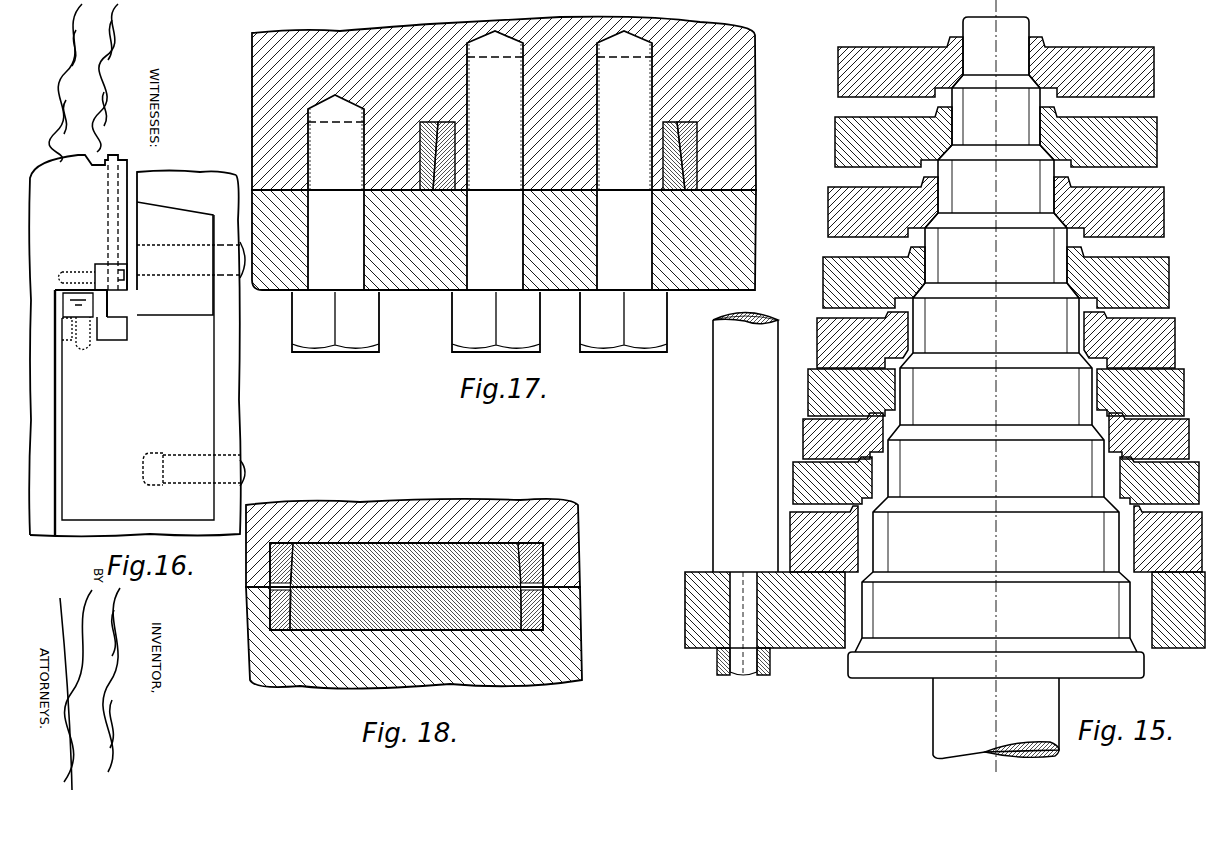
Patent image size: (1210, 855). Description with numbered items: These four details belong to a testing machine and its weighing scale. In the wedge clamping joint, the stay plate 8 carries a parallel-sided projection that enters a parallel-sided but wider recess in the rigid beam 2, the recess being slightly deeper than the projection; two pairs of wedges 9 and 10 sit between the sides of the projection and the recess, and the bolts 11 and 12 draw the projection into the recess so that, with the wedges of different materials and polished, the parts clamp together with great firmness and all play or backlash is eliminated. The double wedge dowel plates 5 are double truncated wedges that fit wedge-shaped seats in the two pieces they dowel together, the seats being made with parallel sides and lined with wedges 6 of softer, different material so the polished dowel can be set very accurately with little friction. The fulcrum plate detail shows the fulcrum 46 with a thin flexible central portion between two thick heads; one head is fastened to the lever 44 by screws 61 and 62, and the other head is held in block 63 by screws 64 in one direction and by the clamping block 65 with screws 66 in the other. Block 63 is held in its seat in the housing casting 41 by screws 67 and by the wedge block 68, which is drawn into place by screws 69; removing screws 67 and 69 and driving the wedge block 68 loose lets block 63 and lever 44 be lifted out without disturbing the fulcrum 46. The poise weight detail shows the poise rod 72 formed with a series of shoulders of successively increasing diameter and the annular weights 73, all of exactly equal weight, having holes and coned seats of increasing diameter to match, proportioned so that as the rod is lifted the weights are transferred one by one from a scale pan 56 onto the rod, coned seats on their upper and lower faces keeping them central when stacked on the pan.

In FIG. 17, the beam 2 is at (757, 145).
In FIG. 18, the dowel plate 5 is at (386, 546).
In FIG. 18, the lining wedge 6 is at (548, 616).
In FIG. 17, the stay plate 8 is at (757, 238).
In FIG. 17, the wedge 9 is at (668, 192).
In FIG. 17, the wedge 10 is at (412, 192).
In FIG. 17, the bolt 11 is at (333, 351).
In FIG. 17, the bolt 12 is at (467, 351).
In FIG. 16, the housing casting 41 is at (186, 231).
In FIG. 16, the lever 44 is at (135, 345).
In FIG. 16, the fulcrum 46 is at (118, 304).
In FIG. 15, the scale pan 56 is at (783, 650).
In FIG. 16, the screw 61 is at (104, 183).
In FIG. 16, the screw 62 is at (97, 272).
In FIG. 16, the block 63 is at (138, 367).
In FIG. 16, the screw 64 is at (72, 350).
In FIG. 16, the clamping block 65 is at (56, 303).
In FIG. 16, the screw 66 is at (68, 292).
In FIG. 16, the screw 67 is at (248, 458).
In FIG. 16, the wedge block 68 is at (175, 258).
In FIG. 16, the screw 69 is at (246, 285).
In FIG. 15, the poise rod 72 is at (933, 720).
In FIG. 15, the annular weight 73 is at (1171, 283).